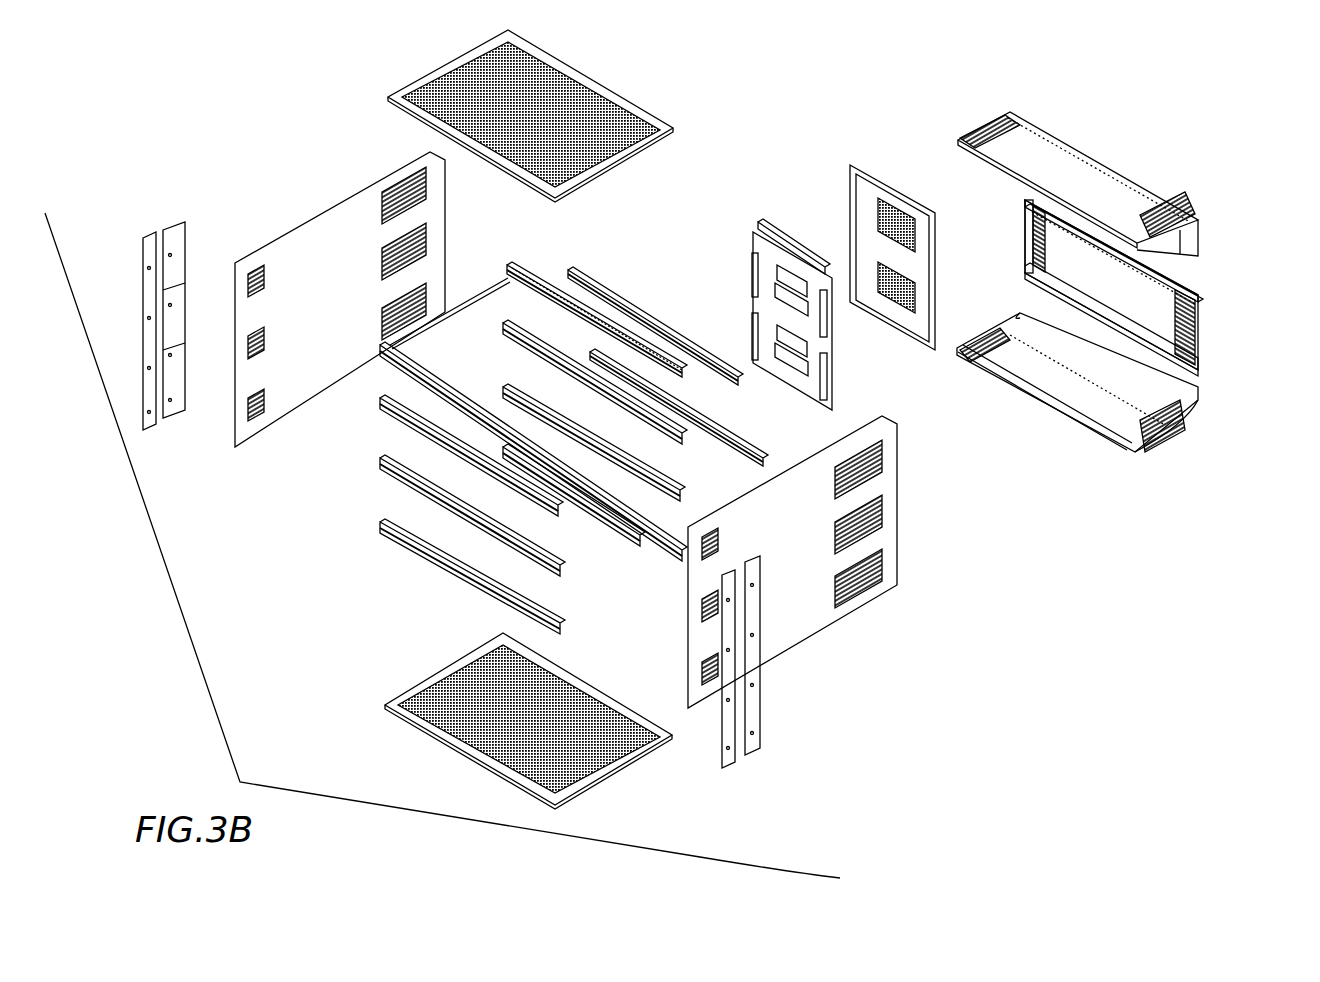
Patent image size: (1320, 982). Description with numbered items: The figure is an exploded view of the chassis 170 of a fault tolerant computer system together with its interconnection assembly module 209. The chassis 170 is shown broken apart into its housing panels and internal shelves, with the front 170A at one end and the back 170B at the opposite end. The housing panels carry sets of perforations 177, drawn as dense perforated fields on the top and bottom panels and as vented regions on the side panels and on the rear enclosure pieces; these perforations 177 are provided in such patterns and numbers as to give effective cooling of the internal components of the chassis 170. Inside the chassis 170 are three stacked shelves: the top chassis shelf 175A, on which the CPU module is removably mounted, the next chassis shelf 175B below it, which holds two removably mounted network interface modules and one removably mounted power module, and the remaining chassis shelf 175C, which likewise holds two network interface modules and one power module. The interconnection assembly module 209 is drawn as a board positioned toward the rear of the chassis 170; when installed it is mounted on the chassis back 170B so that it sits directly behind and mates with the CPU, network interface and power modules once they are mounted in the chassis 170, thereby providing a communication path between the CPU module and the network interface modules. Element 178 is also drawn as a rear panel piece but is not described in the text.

The chassis 170 is at (758, 55).
The front 170A is at (258, 572).
The back 170B is at (1250, 148).
The top chassis shelf 175A is at (400, 428).
The chassis shelf 175B is at (400, 488).
The chassis shelf 175C is at (400, 550).
The perforations 177 is at (553, 70).
The rear panel 178 is at (915, 178).
The interconnection assembly module 209 is at (742, 208).